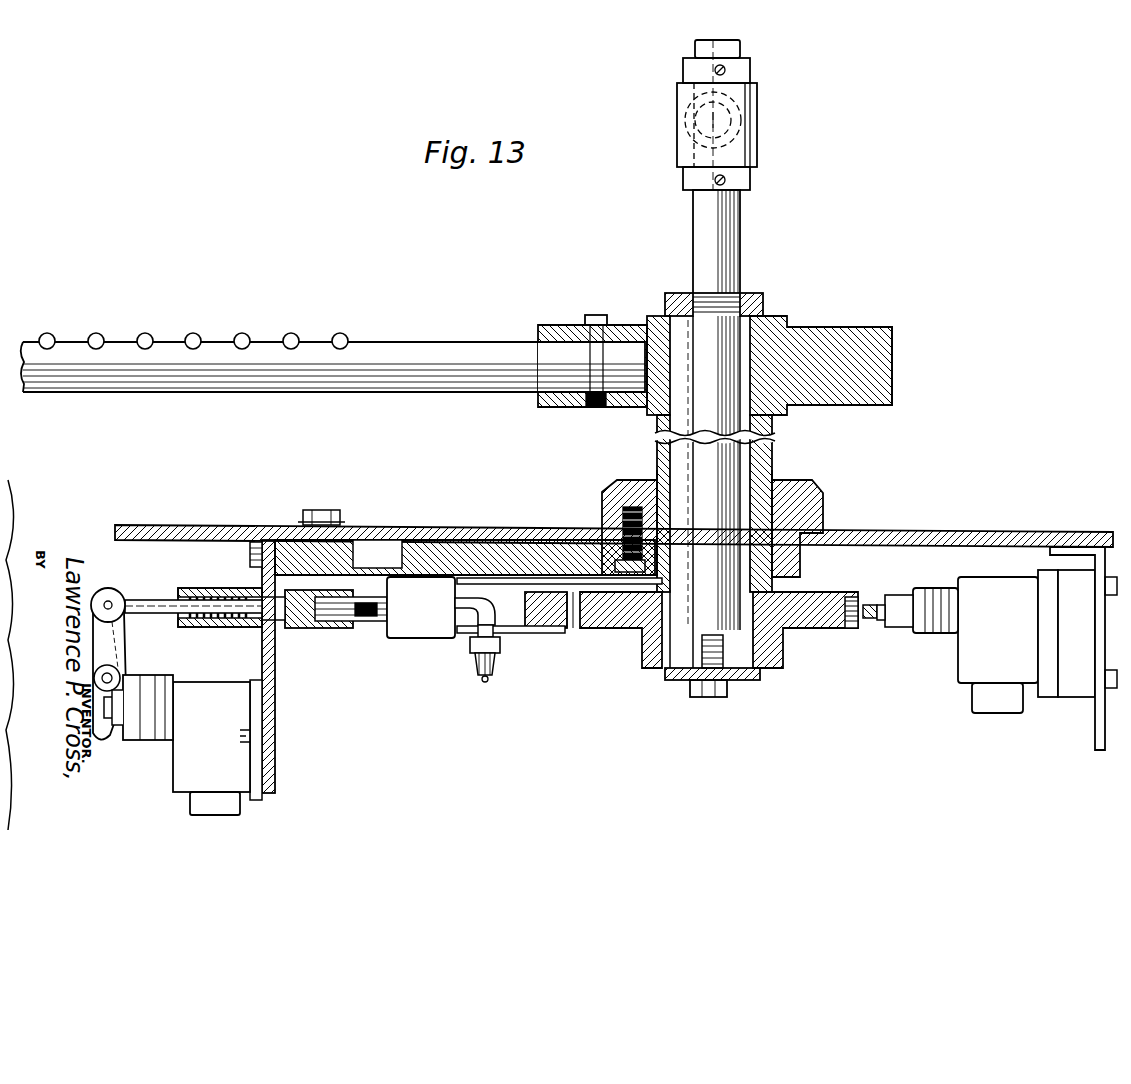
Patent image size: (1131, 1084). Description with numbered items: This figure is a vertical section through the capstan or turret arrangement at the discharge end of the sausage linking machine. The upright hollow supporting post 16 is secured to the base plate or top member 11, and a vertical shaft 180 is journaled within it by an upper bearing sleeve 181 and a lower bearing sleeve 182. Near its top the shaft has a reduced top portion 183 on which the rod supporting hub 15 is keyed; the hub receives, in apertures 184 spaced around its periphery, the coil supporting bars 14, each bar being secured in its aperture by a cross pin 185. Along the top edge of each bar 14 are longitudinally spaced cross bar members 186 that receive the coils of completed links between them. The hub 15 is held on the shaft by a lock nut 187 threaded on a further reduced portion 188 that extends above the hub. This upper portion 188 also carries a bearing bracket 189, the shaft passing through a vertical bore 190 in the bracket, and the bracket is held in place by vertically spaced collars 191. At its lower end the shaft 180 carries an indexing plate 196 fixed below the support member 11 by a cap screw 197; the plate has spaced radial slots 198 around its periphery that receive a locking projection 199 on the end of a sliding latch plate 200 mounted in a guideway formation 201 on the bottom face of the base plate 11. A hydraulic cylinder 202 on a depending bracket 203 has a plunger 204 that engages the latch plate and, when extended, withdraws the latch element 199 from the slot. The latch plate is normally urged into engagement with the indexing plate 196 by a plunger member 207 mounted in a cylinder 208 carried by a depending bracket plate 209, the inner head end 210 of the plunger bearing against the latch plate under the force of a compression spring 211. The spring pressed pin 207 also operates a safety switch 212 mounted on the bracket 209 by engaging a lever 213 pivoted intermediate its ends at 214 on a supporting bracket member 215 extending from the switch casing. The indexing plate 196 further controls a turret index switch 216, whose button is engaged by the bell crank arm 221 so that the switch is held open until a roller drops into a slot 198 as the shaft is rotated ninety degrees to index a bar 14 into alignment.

The top member 11 is at (477, 527).
The link receiving and supporting bars 14 is at (418, 352).
The hub forming member 15 is at (892, 365).
The upright post formation 16 is at (657, 450).
The vertical shaft 180 is at (772, 452).
The upper bearing sleeve 181 is at (772, 428).
The lower bearing sleeve 182 is at (665, 510).
The reduced top portion 183 is at (732, 340).
The apertures 184 is at (553, 348).
The cross pin 185 is at (590, 397).
The cross bar members 186 is at (288, 335).
The lock nut 187 is at (755, 300).
The further reduced portion 188 is at (740, 248).
The bearing bracket 189 is at (690, 125).
The vertical bore 190 is at (750, 148).
The collars 191 is at (750, 69).
The indexing plate 196 is at (820, 628).
The cap screw 197 is at (745, 675).
The radial slots 198 is at (852, 628).
The locking projection 199 is at (580, 628).
The latch plate member 200 is at (545, 633).
The guideway formation 201 is at (525, 648).
The hydraulic cylinder 202 is at (440, 638).
The depending bracket 203 is at (372, 625).
The plunger 204 is at (330, 628).
The plunger member 207 is at (148, 600).
The cylinder 208 is at (193, 620).
The depending bracket plate 209 is at (275, 660).
The inner head end 210 is at (277, 608).
The compression spring 211 is at (228, 620).
The safety switch 212 is at (182, 763).
The lever 213 is at (115, 643).
The pivot 214 is at (112, 680).
The supporting bracket member 215 is at (160, 675).
The turret index switch 216 is at (960, 672).
The bell crank arm 221 is at (895, 606).